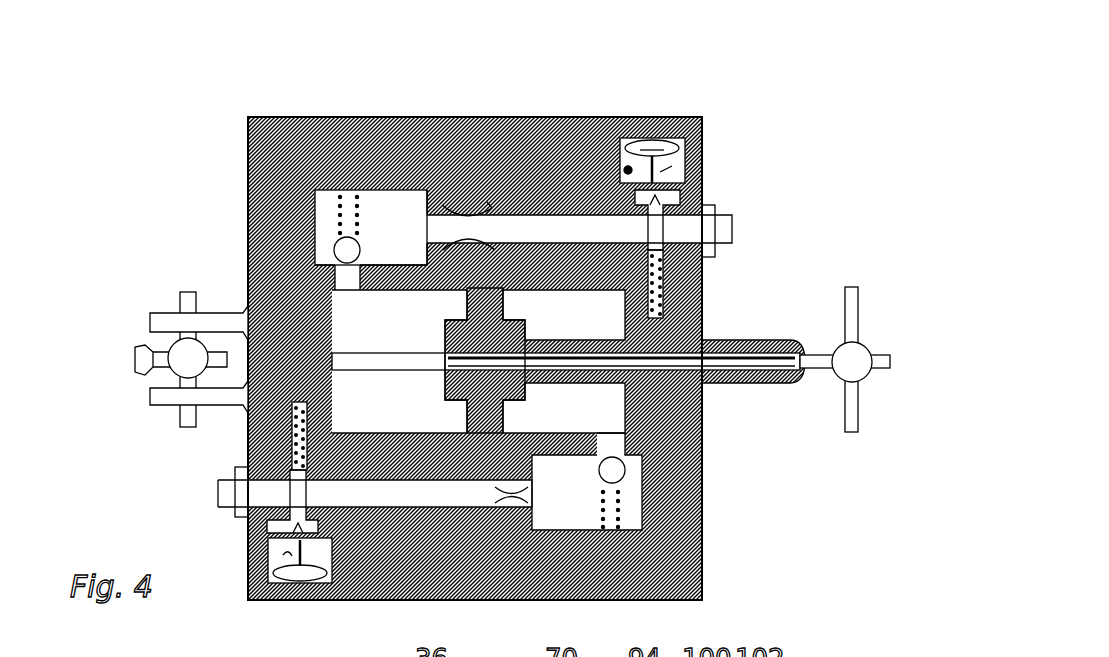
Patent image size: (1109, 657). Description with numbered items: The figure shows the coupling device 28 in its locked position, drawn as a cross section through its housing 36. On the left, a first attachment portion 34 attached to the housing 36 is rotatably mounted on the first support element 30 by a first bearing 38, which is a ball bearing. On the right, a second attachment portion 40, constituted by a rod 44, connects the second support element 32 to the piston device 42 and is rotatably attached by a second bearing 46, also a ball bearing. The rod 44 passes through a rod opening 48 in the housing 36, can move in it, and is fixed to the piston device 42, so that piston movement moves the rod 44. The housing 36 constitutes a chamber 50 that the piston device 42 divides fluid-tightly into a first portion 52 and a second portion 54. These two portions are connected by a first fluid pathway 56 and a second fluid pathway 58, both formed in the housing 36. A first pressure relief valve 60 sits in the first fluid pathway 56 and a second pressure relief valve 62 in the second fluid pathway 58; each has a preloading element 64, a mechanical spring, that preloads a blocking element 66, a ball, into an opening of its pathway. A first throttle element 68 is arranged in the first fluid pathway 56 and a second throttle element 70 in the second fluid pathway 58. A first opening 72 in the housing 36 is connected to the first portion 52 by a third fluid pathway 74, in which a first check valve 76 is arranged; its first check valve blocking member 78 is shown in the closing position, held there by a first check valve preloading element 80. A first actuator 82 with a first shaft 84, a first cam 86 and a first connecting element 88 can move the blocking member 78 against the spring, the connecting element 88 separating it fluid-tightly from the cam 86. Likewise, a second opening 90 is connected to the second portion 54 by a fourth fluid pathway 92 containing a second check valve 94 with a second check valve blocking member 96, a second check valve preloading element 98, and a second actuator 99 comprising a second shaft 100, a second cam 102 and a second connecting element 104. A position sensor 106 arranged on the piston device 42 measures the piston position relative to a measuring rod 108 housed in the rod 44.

The coupling device 28 is at (218, 101).
The first support element 30 is at (150, 358).
The second support element 32 is at (844, 374).
The first attachment portion 34 is at (228, 312).
The housing 36 is at (405, 117).
The first bearing 38 is at (172, 378).
The second attachment portion 40 is at (760, 385).
The piston device 42 is at (440, 330).
The rod 44 is at (740, 340).
The second bearing 46 is at (858, 432).
The rod opening 48 is at (703, 388).
The chamber 50 is at (564, 315).
The first portion 52 is at (399, 361).
The second portion 54 is at (564, 408).
The first fluid pathway 56 is at (390, 493).
The second fluid pathway 58 is at (564, 227).
The first pressure relief valve 60 is at (632, 496).
The second pressure relief valve 62 is at (322, 213).
The preloading element 64 is at (338, 200).
The blocking element 66 is at (338, 250).
The first throttle element 68 is at (508, 495).
The second throttle element 70 is at (508, 212).
The first opening 72 is at (240, 500).
The third fluid pathway 74 is at (243, 492).
The first check valve 76 is at (268, 522).
The first check valve blocking member 78 is at (310, 496).
The first check valve preloading element 80 is at (294, 440).
The first actuator 82 is at (267, 590).
The first shaft 84 is at (291, 597).
The first cam 86 is at (296, 584).
The first connecting element 88 is at (301, 555).
The second opening 90 is at (708, 200).
The fourth fluid pathway 92 is at (700, 231).
The second check valve 94 is at (730, 96).
The second check valve blocking member 96 is at (668, 170).
The second check valve preloading element 98 is at (660, 278).
The second actuator 99 is at (685, 150).
The second shaft 100 is at (652, 146).
The second cam 102 is at (660, 158).
The second connecting element 104 is at (655, 162).
The position sensor 106 is at (436, 348).
The measuring rod 108 is at (338, 362).